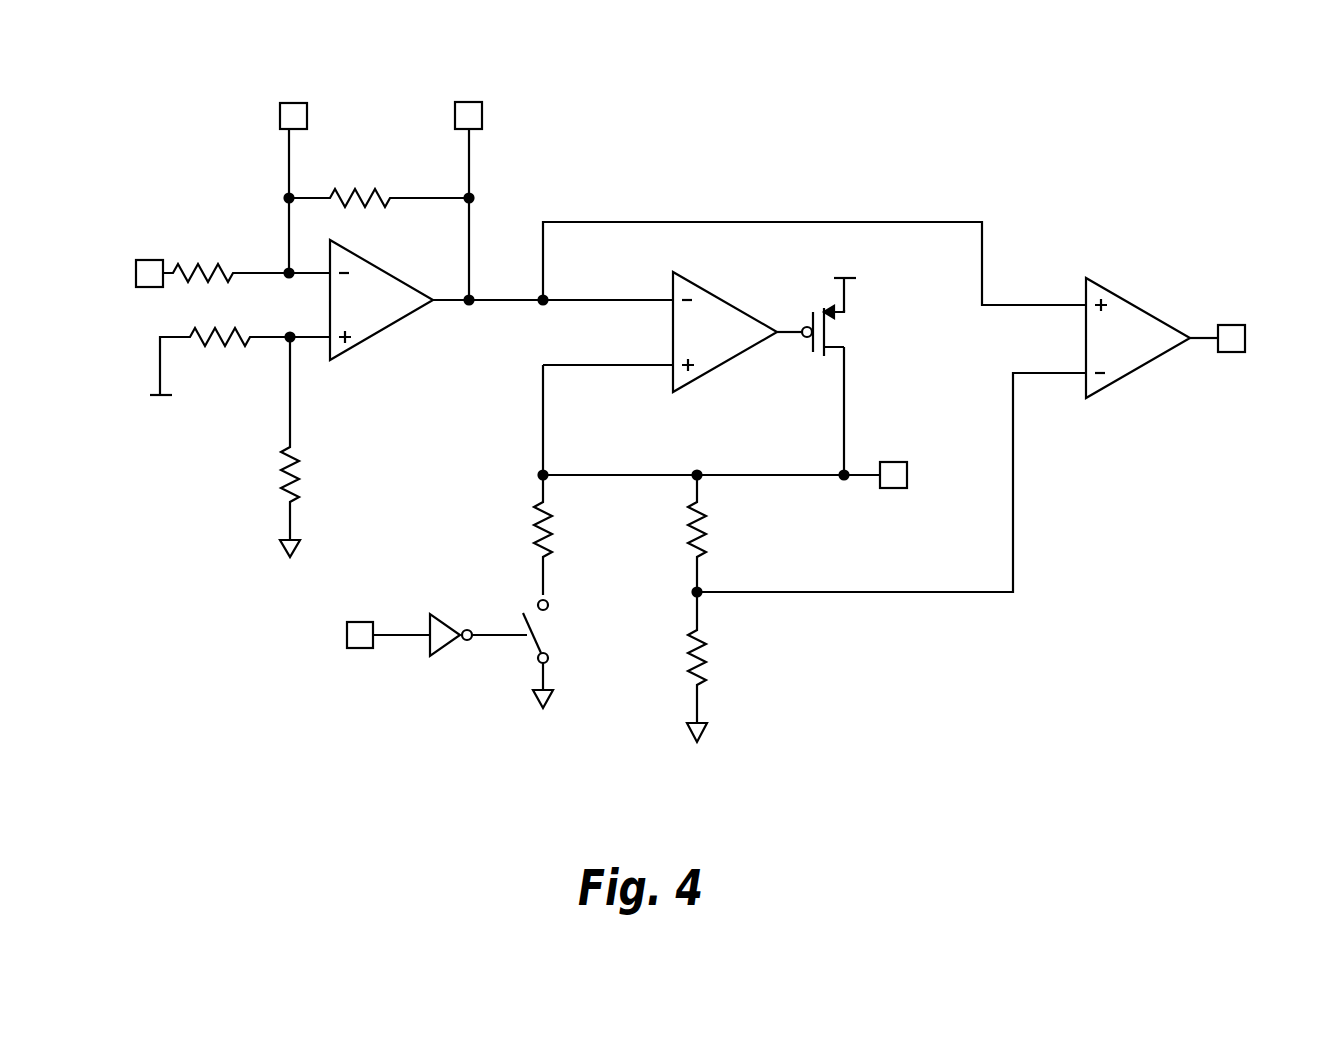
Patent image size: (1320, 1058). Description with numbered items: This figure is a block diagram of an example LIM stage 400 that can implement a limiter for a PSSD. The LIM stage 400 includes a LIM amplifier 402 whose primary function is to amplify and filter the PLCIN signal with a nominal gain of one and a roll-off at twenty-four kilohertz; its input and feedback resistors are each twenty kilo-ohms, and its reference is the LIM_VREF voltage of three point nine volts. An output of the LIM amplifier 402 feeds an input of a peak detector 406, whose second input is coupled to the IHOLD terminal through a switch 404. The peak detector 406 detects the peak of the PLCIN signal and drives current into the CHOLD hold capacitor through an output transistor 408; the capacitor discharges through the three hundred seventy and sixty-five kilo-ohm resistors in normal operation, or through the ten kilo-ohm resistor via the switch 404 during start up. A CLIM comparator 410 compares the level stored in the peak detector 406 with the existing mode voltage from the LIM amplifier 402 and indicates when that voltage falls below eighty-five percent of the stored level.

The LIM stage 400 is at (1085, 162).
The LIM amplifier 402 is at (393, 275).
The switch 404 is at (549, 657).
The peak detector 406 is at (718, 297).
The transistor 408 is at (818, 352).
The CLIM comparator 410 is at (1122, 298).